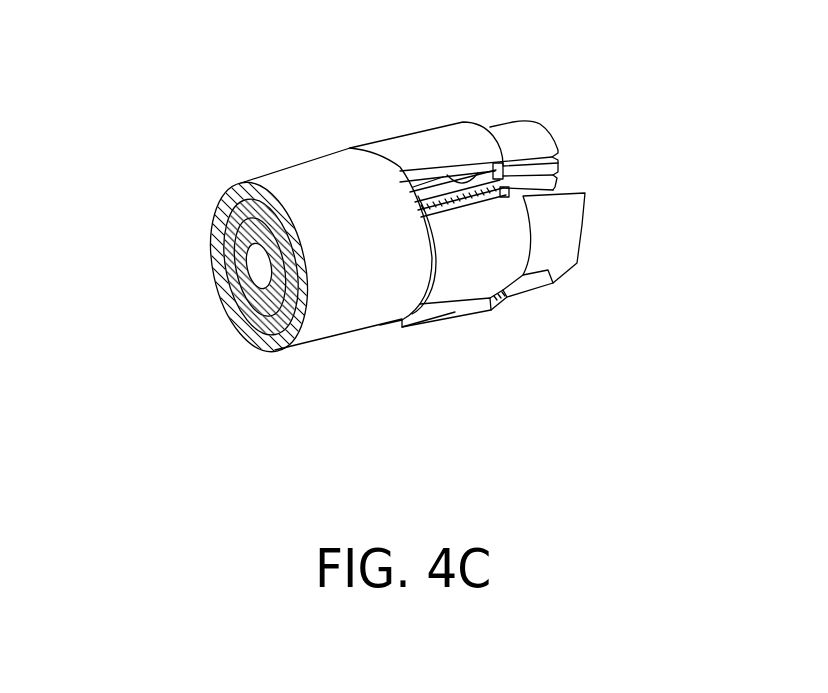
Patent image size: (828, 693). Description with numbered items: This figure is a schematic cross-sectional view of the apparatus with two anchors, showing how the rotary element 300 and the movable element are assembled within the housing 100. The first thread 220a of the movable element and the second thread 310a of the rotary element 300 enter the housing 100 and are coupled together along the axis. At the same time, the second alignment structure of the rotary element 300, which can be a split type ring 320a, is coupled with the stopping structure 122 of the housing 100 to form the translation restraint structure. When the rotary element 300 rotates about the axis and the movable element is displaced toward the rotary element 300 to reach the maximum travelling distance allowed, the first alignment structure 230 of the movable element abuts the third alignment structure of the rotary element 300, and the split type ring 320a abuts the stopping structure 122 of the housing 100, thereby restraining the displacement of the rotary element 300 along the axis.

The housing 100 is at (350, 170).
The stopping structure 122 is at (450, 178).
The first alignment structure 230 is at (213, 252).
The first thread 220a is at (232, 314).
The second thread 310a is at (286, 325).
The split type ring 320a is at (507, 168).
The rotary element 300 is at (572, 212).